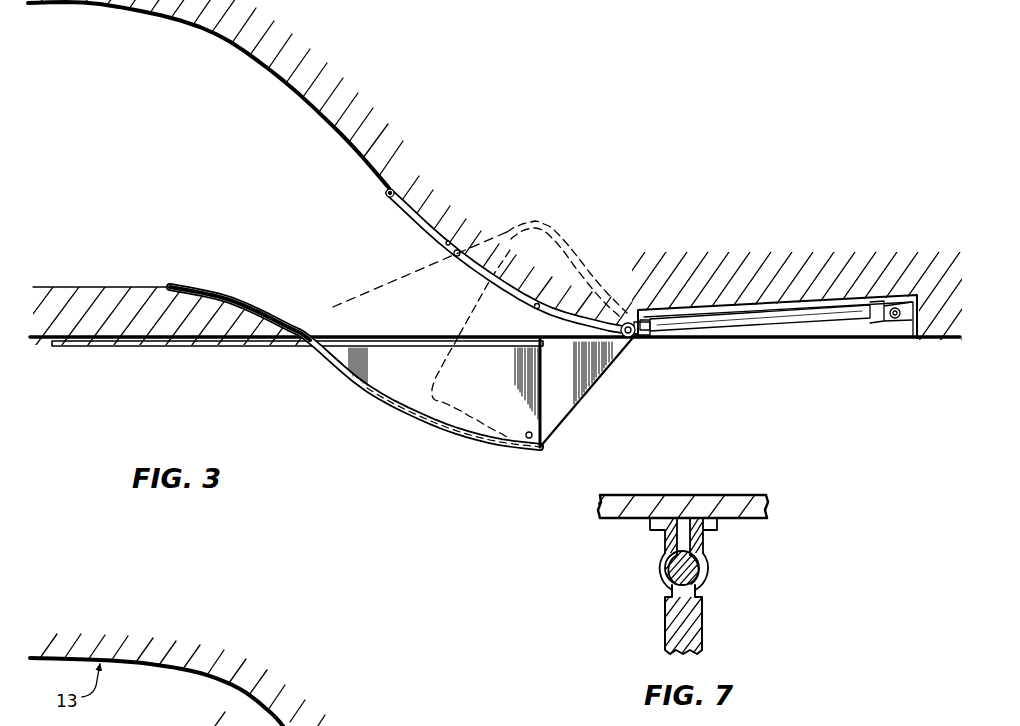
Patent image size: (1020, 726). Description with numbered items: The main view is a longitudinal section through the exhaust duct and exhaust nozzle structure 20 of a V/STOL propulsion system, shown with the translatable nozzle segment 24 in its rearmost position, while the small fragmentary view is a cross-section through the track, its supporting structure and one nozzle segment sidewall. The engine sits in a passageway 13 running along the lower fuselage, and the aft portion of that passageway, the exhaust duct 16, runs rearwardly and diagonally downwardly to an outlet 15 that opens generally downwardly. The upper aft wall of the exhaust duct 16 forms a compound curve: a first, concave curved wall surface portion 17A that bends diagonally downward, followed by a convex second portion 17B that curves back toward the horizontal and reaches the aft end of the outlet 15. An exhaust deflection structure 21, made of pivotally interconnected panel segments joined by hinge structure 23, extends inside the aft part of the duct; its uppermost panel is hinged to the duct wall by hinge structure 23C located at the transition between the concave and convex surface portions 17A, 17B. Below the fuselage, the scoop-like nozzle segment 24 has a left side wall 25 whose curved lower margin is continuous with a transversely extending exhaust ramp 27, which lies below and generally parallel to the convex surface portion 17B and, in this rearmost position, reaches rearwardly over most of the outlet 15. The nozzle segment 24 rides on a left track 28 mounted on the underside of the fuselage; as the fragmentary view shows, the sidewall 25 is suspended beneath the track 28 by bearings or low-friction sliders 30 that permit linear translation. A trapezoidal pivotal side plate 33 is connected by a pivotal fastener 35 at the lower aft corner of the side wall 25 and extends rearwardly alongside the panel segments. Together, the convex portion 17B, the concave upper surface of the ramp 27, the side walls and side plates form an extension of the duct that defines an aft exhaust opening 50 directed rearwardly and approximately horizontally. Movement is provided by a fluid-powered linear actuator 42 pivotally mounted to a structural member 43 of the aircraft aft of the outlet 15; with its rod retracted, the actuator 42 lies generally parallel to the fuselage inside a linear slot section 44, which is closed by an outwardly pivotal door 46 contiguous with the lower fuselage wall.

In FIG. 3, the passageway 13 is at (100, 9).
In FIG. 3, the outlet 15 is at (317, 336).
In FIG. 3, the exhaust duct 16 is at (170, 204).
In FIG. 3, the concave curved wall surface portion 17A is at (278, 77).
In FIG. 3, the convex wall surface portion 17B is at (459, 248).
In FIG. 3, the exhaust nozzle structure 20 is at (459, 445).
In FIG. 3, the exhaust deflection structure 21 is at (462, 271).
In FIG. 3, the hinge structure 23 is at (635, 329).
In FIG. 3, the hinge structure 23C is at (385, 196).
In FIG. 3, the nozzle segment 24 is at (351, 386).
In FIG. 3, the left side wall 25 is at (392, 386).
In FIG. 7, the left side wall 25 is at (705, 624).
In FIG. 3, the exhaust ramp 27 is at (436, 411).
In FIG. 3, the left track 28 is at (200, 347).
In FIG. 7, the left track 28 is at (652, 578).
In FIG. 7, the bearings 30 is at (712, 553).
In FIG. 3, the left pivotal side plate 33 is at (617, 367).
In FIG. 3, the pivotal fastener 35 is at (548, 440).
In FIG. 3, the linear actuator 42 is at (718, 323).
In FIG. 3, the structural member 43 is at (932, 322).
In FIG. 3, the linear slot section 44 is at (773, 302).
In FIG. 3, the pivotal door 46 is at (835, 345).
In FIG. 3, the aft exhaust opening 50 is at (598, 398).